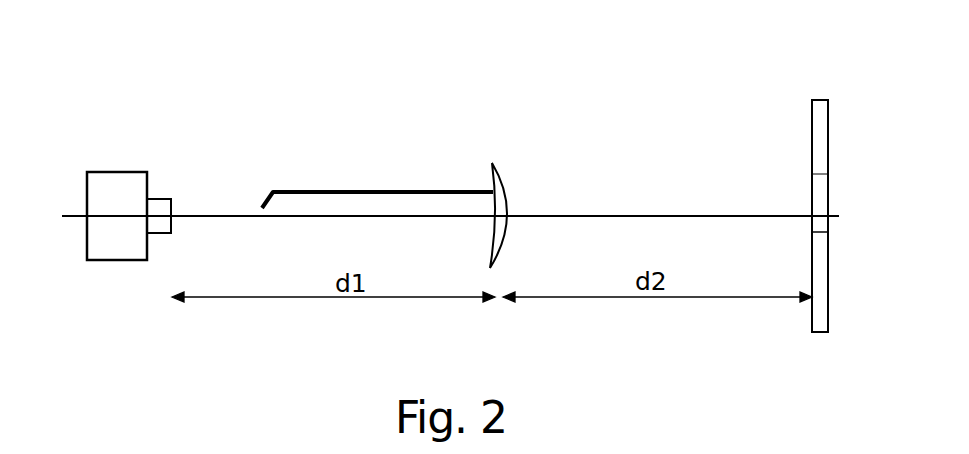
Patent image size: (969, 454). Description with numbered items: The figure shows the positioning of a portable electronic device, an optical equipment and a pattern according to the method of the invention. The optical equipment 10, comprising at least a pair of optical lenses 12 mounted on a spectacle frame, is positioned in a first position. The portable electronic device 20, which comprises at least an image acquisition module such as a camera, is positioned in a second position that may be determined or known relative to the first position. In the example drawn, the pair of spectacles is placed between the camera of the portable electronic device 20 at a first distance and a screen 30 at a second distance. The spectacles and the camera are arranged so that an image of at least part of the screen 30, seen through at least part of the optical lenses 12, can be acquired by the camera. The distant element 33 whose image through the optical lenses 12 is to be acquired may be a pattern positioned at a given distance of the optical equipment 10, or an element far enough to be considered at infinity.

The portable electronic device 20 is at (117, 172).
The optical equipment 10 is at (390, 192).
The optical lenses 12 is at (497, 163).
The screen 30 is at (812, 127).
The distant element 33 is at (816, 175).